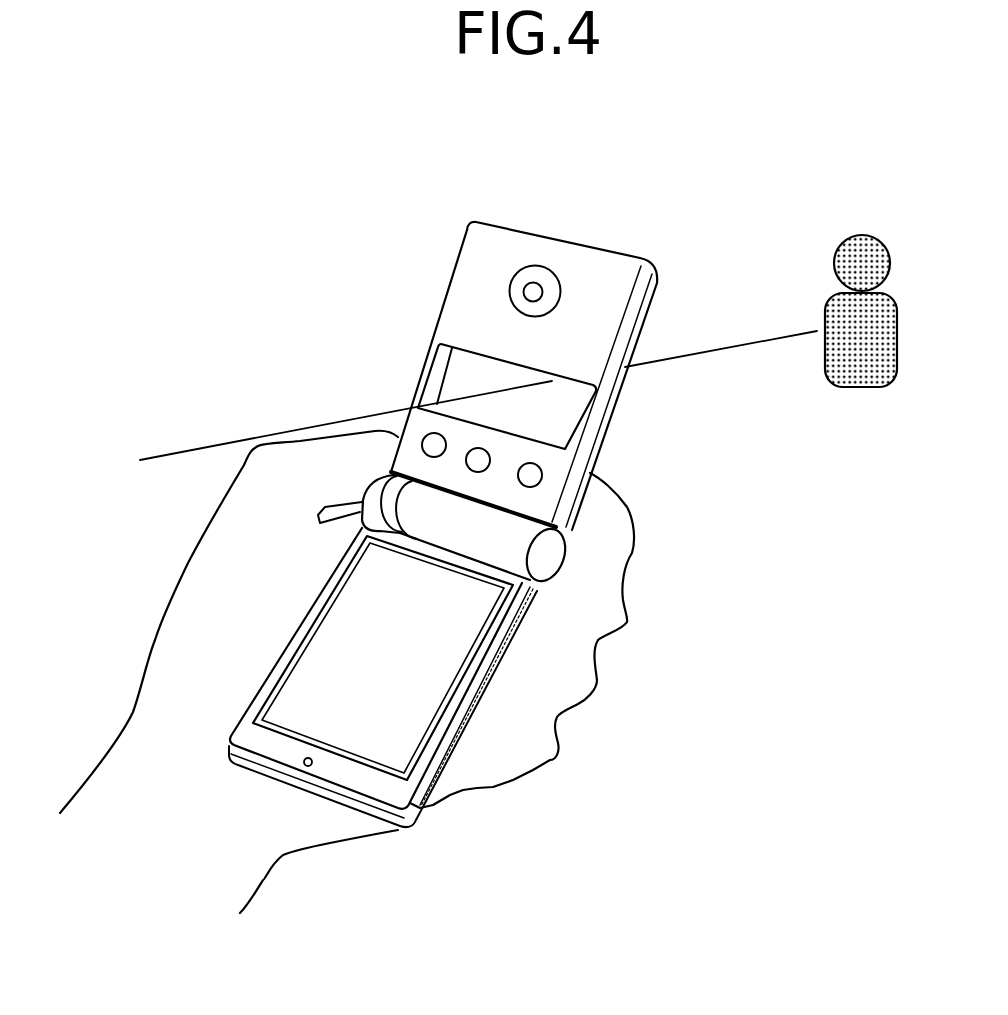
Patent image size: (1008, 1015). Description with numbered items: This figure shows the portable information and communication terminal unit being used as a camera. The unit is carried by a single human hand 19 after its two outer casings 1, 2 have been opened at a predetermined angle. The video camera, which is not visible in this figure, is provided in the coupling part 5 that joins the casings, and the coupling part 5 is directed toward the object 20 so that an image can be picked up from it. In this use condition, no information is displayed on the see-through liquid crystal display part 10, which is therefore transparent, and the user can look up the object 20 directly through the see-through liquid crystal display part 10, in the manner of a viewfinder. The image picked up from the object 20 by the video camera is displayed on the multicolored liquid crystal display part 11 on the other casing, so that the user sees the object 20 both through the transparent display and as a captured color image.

The outer casing 1 is at (645, 298).
The outer casing 2 is at (410, 804).
The coupling part 5 is at (543, 553).
The see-through liquid crystal display part 10 is at (553, 420).
The multicolored liquid crystal display part 11 is at (427, 662).
The human hand 19 is at (628, 623).
The object 20 is at (858, 390).